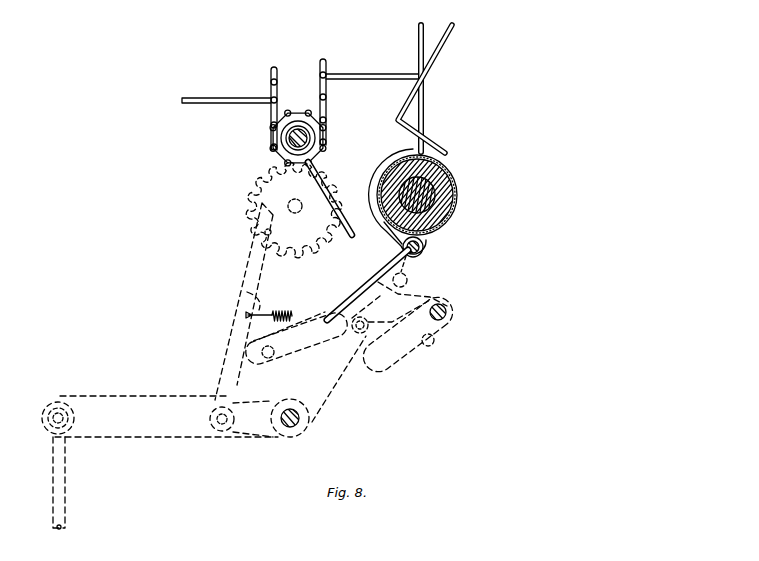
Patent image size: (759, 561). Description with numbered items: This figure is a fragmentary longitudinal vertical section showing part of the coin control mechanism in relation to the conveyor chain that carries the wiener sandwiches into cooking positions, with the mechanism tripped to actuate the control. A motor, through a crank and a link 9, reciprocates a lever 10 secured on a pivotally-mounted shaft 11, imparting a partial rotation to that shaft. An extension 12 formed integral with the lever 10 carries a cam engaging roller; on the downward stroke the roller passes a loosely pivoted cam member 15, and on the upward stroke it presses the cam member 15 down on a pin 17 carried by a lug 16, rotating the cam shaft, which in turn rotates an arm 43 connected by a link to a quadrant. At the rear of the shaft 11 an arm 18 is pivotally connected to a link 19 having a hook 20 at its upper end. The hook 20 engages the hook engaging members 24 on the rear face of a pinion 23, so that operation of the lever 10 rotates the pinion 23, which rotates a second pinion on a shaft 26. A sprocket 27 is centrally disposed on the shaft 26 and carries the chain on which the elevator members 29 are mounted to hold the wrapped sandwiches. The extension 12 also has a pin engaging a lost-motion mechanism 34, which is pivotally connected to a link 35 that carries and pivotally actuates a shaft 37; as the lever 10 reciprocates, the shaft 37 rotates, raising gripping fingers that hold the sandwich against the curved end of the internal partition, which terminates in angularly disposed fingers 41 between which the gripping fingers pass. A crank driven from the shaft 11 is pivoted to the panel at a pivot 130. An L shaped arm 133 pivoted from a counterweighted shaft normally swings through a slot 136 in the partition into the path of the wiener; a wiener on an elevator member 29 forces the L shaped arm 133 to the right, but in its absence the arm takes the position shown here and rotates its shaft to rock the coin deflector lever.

The link 9 is at (67, 466).
The lever 10 is at (133, 395).
The pivotally-mounted shaft 11 is at (299, 422).
The extension 12 is at (335, 383).
The cam member 15 is at (405, 355).
The lug 16 is at (445, 318).
The pin 17 is at (433, 345).
The arm 18 is at (242, 409).
The link 19 is at (231, 332).
The hook 20 is at (287, 199).
The pinion 23 is at (252, 192).
The hook engaging members 24 is at (263, 173).
The shaft 26 is at (308, 137).
The sprocket 27 is at (316, 152).
The elevator members 29 is at (222, 98).
The lost-motion mechanism 34 is at (319, 307).
The link 35 is at (410, 274).
The shaft 37 is at (424, 248).
The angularly disposed fingers 41 is at (386, 265).
The arm 43 is at (399, 307).
The pivot 130 is at (456, 186).
The L shaped arm 133 is at (410, 113).
The slot 136 is at (425, 112).